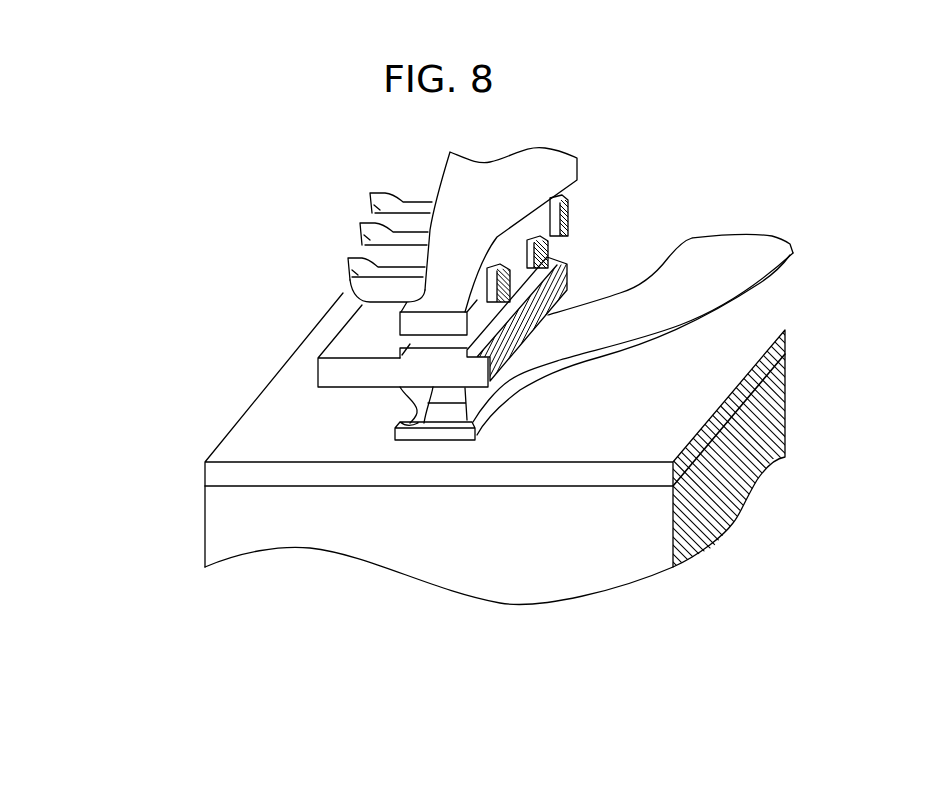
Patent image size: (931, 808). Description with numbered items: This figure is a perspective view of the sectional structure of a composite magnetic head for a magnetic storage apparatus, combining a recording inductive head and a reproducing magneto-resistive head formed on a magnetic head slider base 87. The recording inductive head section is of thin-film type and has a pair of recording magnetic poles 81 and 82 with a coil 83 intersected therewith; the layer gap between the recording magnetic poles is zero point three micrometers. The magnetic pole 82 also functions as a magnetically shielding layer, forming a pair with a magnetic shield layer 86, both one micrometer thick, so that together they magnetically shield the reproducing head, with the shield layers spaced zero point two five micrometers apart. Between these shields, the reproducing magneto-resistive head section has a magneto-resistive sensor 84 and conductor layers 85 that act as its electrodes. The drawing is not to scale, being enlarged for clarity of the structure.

The recording magnetic pole 81 is at (410, 323).
The recording magnetic pole 82 is at (317, 378).
The coil 83 is at (373, 197).
The magneto-resistive sensor 84 is at (430, 437).
The conductor layers 85 is at (413, 408).
The magnetic shield layer 86 is at (223, 473).
The magnetic head slider base 87 is at (572, 578).